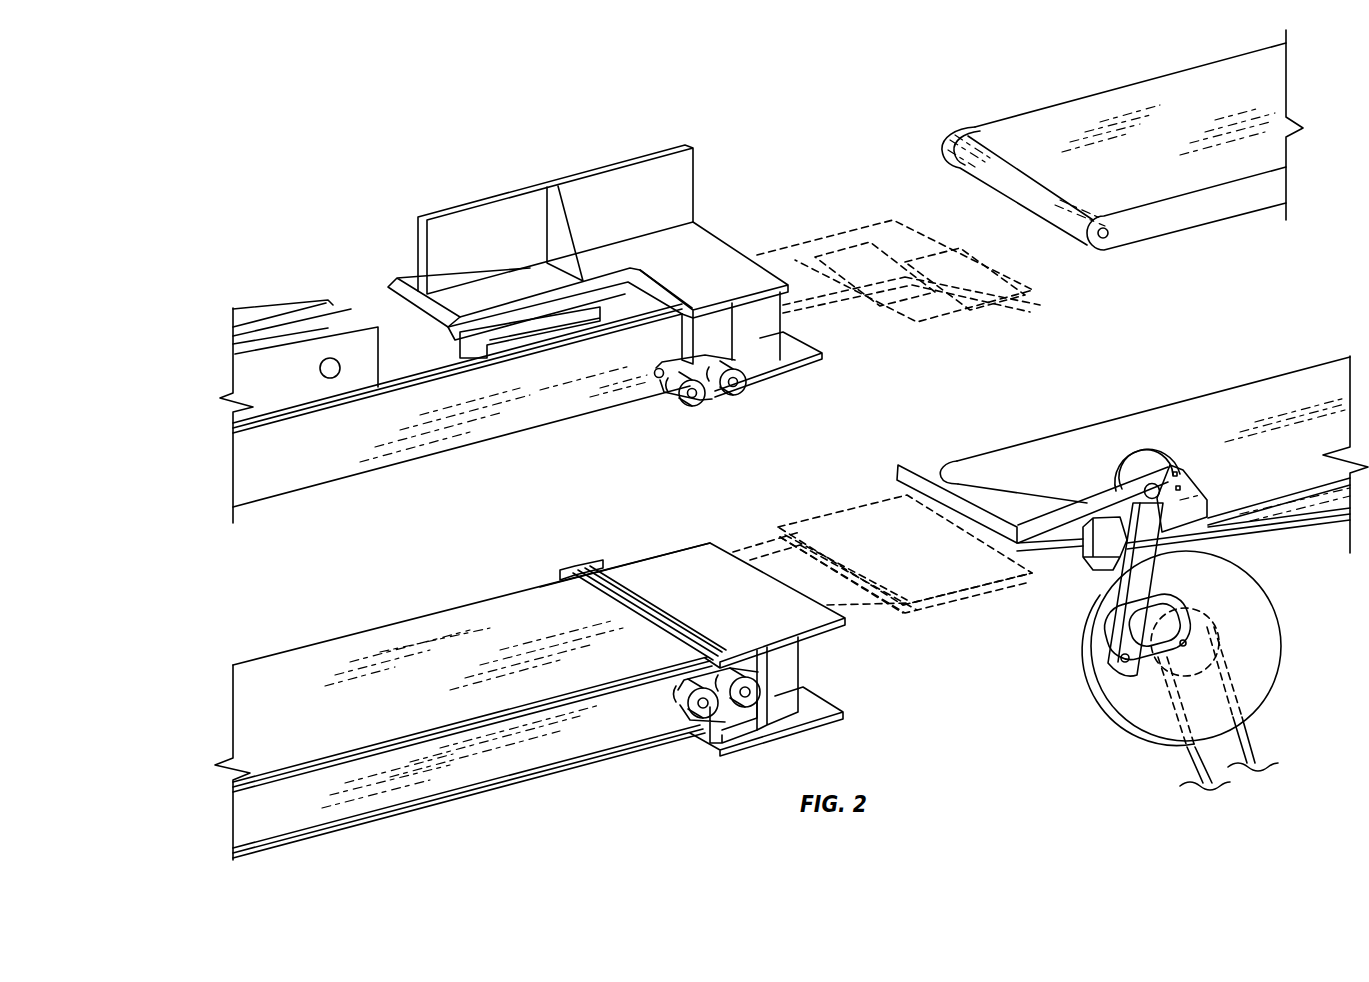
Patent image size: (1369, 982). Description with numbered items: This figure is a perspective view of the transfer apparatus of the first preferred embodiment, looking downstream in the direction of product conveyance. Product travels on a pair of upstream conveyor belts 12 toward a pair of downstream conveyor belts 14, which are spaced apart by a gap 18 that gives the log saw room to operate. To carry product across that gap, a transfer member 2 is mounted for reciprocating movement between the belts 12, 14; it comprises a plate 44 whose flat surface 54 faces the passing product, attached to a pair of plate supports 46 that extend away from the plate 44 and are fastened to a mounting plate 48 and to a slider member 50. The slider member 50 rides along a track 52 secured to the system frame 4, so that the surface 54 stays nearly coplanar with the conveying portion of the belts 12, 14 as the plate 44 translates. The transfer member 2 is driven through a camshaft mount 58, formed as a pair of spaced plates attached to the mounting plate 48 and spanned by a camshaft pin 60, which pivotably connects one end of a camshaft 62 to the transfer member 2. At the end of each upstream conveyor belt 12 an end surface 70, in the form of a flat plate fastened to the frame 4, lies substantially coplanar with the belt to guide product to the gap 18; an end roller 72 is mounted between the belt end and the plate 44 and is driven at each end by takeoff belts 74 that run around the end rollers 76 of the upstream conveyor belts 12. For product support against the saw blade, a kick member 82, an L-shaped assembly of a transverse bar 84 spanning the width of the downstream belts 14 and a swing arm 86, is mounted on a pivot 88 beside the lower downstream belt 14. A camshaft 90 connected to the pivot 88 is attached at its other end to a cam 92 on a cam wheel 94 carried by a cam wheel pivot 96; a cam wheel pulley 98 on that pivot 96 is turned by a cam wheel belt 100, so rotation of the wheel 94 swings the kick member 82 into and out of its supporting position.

The transfer member 2 is at (803, 232).
The system frame 4 is at (458, 207).
The upstream conveyor belts 12 is at (343, 460).
The downstream conveyor belts 14 is at (1167, 220).
The gap 18 is at (840, 328).
The plate 44 is at (1017, 300).
The plate supports 46 is at (873, 222).
The mounting plate 48 is at (340, 297).
The slider member 50 is at (520, 343).
The track 52 is at (630, 287).
The flat surface 54 is at (953, 317).
The camshaft mount 58 is at (312, 303).
The camshaft pin 60 is at (330, 378).
The camshaft 62 is at (283, 327).
The end surface 70 is at (807, 360).
The end roller 72 is at (737, 397).
The takeoff belts 74 is at (663, 390).
The end rollers of the upstream conveyor belts 76 is at (697, 405).
The kick member 82 is at (1061, 456).
The transverse bar 84 is at (903, 463).
The swing arm 86 is at (1107, 498).
The pivot 88 is at (1170, 462).
The camshaft 90 is at (1128, 617).
The cam 92 is at (1103, 633).
The cam wheel 94 is at (1235, 563).
The cam wheel pivot 96 is at (1190, 647).
The cam wheel pulley 98 is at (1270, 577).
The cam wheel belt 100 is at (1243, 750).